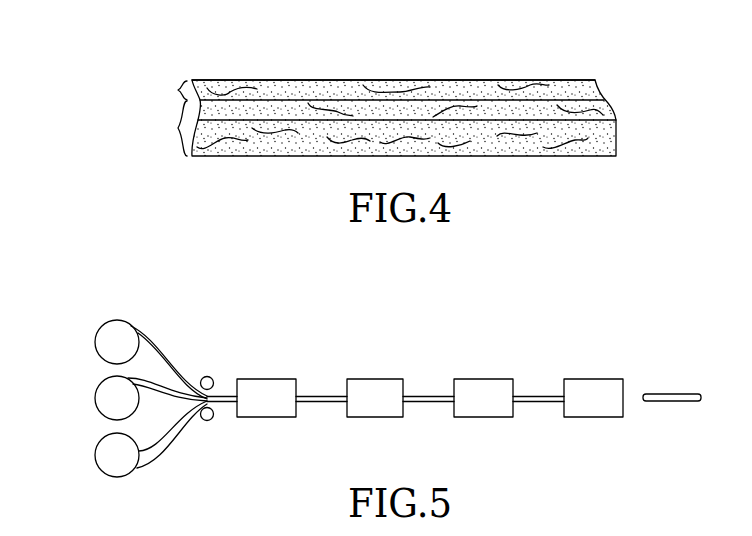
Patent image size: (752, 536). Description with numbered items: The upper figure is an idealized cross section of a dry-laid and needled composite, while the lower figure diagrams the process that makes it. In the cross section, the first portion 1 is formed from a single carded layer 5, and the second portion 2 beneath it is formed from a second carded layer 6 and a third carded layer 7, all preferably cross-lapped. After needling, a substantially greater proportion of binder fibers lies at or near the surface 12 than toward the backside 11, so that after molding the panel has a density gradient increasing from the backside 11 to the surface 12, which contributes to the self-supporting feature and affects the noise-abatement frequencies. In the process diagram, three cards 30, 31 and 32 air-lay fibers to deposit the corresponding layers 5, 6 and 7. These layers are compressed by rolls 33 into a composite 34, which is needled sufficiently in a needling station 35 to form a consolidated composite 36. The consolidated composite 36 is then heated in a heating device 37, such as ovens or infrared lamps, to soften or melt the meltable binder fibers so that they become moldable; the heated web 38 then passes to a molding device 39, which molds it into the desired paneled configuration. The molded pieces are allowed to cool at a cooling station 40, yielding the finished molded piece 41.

In FIG. 4, the first portion 1 is at (381, 90).
In FIG. 4, the second portion 2 is at (387, 128).
In FIG. 4, the first carded layer 5 is at (227, 84).
In FIG. 5, the first carded layer 5 is at (153, 345).
In FIG. 4, the second carded layer 6 is at (275, 107).
In FIG. 5, the second carded layer 6 is at (163, 388).
In FIG. 4, the third carded layer 7 is at (263, 145).
In FIG. 5, the third carded layer 7 is at (165, 438).
In FIG. 4, the backside 11 is at (506, 157).
In FIG. 4, the surface 12 is at (421, 80).
In FIG. 5, the first card 30 is at (97, 337).
In FIG. 5, the second card 31 is at (96, 396).
In FIG. 5, the third card 32 is at (96, 456).
In FIG. 5, the rolls 33 is at (210, 376).
In FIG. 5, the composite 34 is at (223, 410).
In FIG. 5, the needling station 35 is at (272, 379).
In FIG. 5, the consolidated composite 36 is at (316, 403).
In FIG. 5, the heating device 37 is at (377, 379).
In FIG. 5, the web between stations 38 is at (425, 403).
In FIG. 5, the molding device 39 is at (496, 379).
In FIG. 5, the cooling station 40 is at (589, 418).
In FIG. 5, the finished molded piece 41 is at (668, 403).